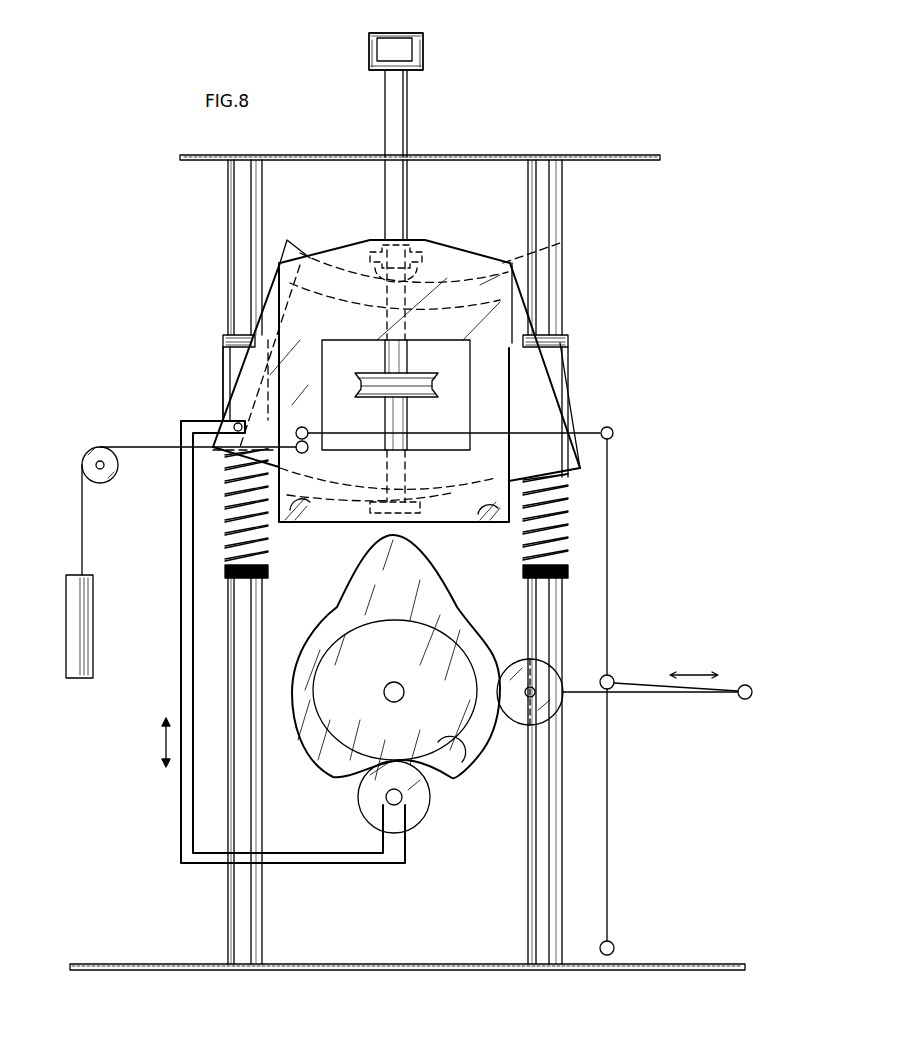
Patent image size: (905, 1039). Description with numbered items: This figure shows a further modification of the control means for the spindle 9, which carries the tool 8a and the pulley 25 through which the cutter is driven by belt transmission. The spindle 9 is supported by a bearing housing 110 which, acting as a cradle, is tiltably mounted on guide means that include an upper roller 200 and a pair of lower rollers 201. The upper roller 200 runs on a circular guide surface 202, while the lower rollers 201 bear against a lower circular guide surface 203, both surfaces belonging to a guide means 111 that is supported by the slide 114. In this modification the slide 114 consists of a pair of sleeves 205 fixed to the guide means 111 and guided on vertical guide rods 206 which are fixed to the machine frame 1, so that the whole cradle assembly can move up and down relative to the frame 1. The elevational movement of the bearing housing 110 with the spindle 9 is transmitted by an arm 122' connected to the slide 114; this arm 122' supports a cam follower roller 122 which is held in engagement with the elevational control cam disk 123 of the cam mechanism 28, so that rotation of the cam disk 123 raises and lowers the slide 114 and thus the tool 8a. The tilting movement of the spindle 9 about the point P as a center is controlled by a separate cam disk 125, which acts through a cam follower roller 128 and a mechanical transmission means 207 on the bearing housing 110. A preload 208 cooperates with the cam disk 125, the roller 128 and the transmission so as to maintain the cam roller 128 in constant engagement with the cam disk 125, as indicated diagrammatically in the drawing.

The machine frame 1 is at (128, 964).
The point P is at (421, 44).
The tool 8a is at (423, 55).
The spindle 9 is at (405, 111).
The upper roller 200 is at (414, 250).
The bearing housing 110 is at (466, 260).
The guide means 111 is at (554, 410).
The slide 114 is at (224, 360).
The circular guide surface 202 is at (564, 242).
The vertical guide rods 206 is at (237, 278).
The sleeves 205 is at (234, 382).
The pulley 25 is at (440, 384).
The lower rollers 201 is at (302, 521).
The lower circular guide surface 203 is at (580, 482).
The mechanical transmission means 207 is at (606, 609).
The cam disk 125 is at (460, 624).
The cam mechanism 28 is at (394, 700).
The elevational control cam disk 123 is at (454, 764).
The cam follower roller 122 is at (415, 797).
The arm 122' is at (283, 658).
The cam follower roller 128 is at (548, 680).
The preload 208 is at (94, 602).